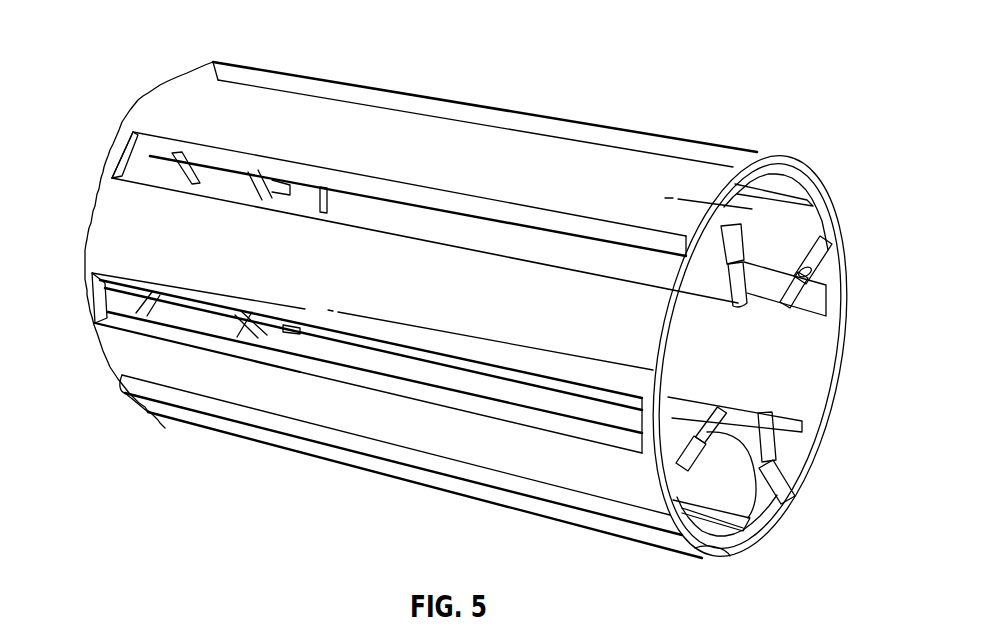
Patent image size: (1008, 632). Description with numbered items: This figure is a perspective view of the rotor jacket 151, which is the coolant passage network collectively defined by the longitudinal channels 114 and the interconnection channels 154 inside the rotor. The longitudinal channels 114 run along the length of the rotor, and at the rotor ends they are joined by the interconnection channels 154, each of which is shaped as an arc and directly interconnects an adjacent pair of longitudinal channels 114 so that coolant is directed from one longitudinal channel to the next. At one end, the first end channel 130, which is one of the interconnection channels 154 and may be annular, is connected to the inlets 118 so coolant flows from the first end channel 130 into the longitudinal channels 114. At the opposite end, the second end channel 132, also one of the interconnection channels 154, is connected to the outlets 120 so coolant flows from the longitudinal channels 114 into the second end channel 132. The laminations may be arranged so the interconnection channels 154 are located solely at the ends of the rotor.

The rotor jacket 151 is at (464, 300).
The longitudinal channels 114 is at (500, 143).
The outlets 120 is at (180, 167).
The second end channel 132 is at (112, 155).
The first end channel 130 is at (760, 153).
The inlets 118 is at (747, 282).
The interconnection channels 154 is at (705, 552).